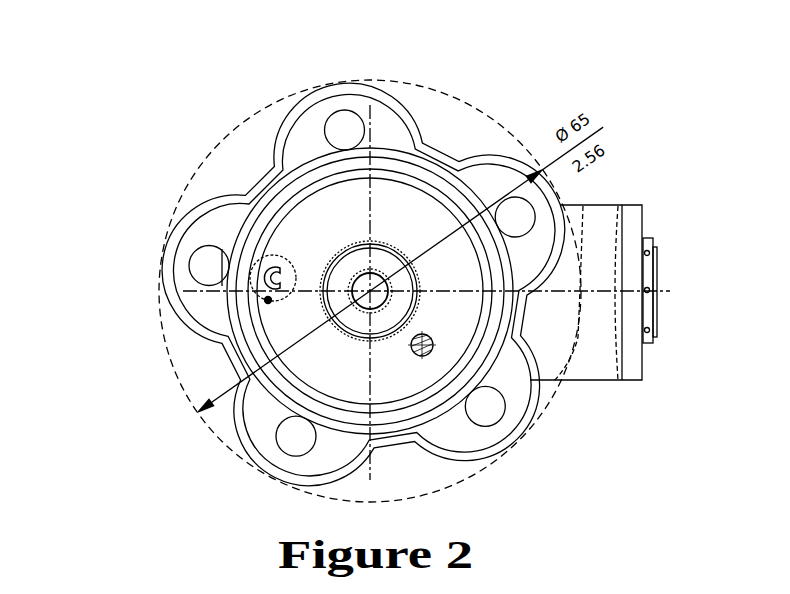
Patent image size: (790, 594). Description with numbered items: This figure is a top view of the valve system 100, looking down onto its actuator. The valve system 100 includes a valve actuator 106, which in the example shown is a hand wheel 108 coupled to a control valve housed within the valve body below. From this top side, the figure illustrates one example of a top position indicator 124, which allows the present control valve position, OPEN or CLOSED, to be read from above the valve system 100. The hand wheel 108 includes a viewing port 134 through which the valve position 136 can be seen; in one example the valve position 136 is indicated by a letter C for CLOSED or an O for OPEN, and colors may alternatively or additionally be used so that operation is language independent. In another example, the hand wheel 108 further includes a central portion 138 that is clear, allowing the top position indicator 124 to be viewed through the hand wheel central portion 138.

The valve system 100 is at (196, 69).
The valve actuator 106 is at (172, 204).
The hand wheel 108 is at (497, 151).
The top position indicator 124 is at (128, 305).
The viewing port 134 is at (249, 307).
The valve position 136 is at (264, 306).
The central portion 138 is at (488, 288).